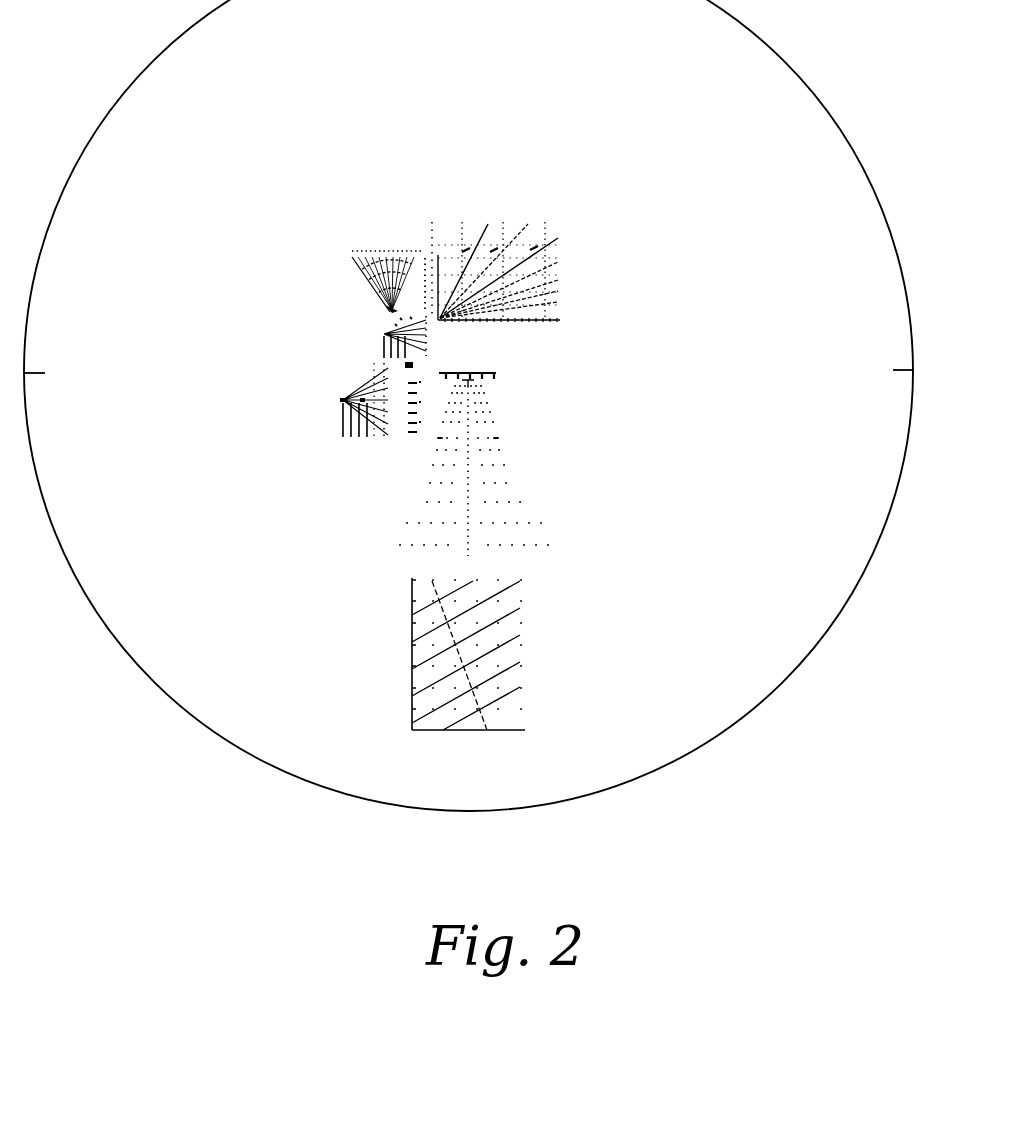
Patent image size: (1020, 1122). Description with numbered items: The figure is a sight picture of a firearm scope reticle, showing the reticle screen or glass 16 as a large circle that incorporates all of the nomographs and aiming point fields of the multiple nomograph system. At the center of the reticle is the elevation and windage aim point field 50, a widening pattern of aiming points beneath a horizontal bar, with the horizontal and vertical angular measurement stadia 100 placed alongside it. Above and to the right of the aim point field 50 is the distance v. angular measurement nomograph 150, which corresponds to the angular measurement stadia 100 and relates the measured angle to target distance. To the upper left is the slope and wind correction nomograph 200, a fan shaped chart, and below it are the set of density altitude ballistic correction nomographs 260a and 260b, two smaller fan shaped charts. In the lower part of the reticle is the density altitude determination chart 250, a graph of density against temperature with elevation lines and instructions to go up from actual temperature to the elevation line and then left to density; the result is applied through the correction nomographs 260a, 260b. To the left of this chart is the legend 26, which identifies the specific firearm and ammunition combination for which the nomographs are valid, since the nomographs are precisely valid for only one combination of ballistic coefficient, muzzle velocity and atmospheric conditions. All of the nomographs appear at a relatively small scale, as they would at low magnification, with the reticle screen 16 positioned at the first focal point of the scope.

The reticle screen or glass 16 is at (257, 843).
The legend 26 is at (234, 640).
The elevation and windage aim point field 50 is at (533, 440).
The horizontal and vertical angular measurement stadia 100 is at (398, 452).
The distance v. angular measurement nomograph 150 is at (514, 198).
The slope and wind correction nomograph 200 is at (343, 226).
The density altitude determination chart 250 is at (340, 577).
The density altitude ballistic correction nomograph 260a is at (365, 325).
The density altitude ballistic correction nomograph 260b is at (313, 392).